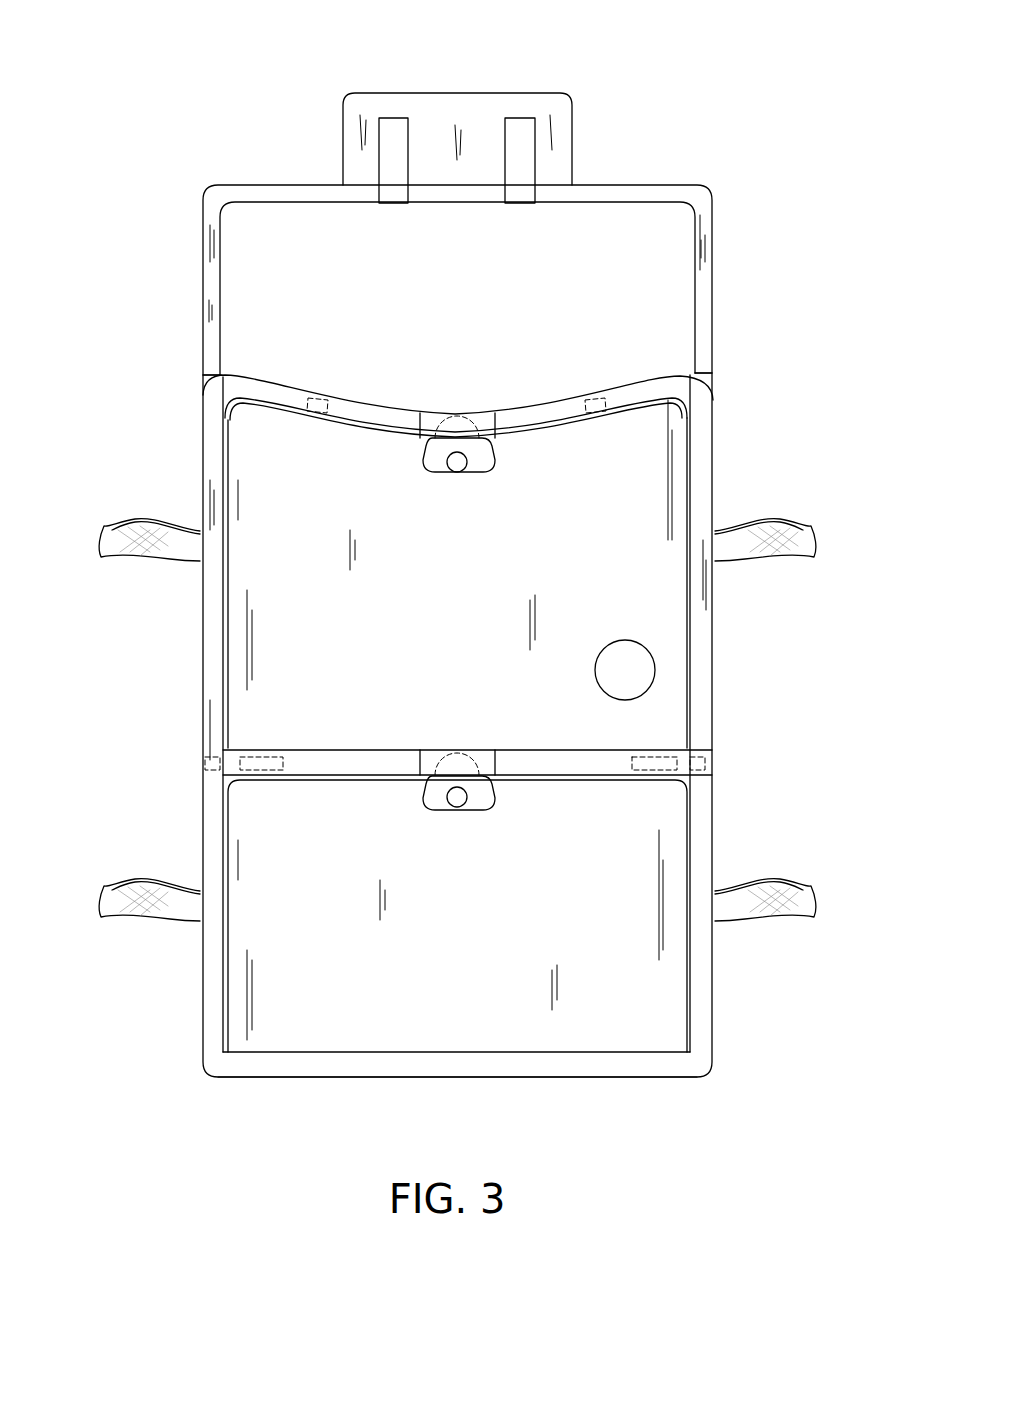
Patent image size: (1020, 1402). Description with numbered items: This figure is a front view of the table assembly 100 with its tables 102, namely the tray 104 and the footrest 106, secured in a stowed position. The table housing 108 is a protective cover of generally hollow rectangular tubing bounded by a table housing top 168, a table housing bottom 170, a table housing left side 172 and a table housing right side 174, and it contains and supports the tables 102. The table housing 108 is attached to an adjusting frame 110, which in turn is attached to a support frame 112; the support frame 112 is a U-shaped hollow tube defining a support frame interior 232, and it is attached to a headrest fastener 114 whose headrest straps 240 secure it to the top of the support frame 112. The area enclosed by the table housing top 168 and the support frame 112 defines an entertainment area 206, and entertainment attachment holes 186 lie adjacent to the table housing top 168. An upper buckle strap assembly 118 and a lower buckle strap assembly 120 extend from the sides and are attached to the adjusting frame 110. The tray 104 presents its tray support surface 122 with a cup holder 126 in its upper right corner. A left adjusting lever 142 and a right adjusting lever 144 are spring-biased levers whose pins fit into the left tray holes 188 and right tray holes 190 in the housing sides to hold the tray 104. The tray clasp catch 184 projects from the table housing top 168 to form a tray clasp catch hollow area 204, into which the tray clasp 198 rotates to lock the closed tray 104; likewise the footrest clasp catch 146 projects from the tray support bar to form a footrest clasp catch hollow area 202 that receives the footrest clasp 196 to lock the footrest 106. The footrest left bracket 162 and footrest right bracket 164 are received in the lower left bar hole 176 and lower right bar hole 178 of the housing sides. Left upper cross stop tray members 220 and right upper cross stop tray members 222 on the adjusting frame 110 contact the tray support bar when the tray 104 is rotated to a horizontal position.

The table assembly 100 is at (235, 186).
The tables 102 is at (560, 1033).
The tray 104 is at (285, 600).
The footrest 106 is at (303, 1027).
The table housing 108 is at (217, 390).
The adjusting frame 110 is at (713, 387).
The support frame 112 is at (705, 200).
The headrest fastener 114 is at (466, 92).
The upper buckle strap assembly 118 is at (110, 527).
The lower buckle strap assembly 120 is at (795, 884).
The tray support surface 122 is at (452, 566).
The cup holder 126 is at (655, 665).
The left adjusting lever 142 is at (262, 762).
The right adjusting lever 144 is at (662, 763).
The footrest clasp catch 146 is at (445, 752).
The footrest left bracket 162 is at (207, 1038).
The footrest right bracket 164 is at (713, 1040).
The table housing top 168 is at (652, 390).
The table housing bottom 170 is at (632, 1065).
The table housing left side 172 is at (210, 848).
The table housing right side 174 is at (712, 835).
The lower left bar hole 176 is at (222, 1045).
The lower right bar hole 178 is at (715, 1048).
The tray clasp catch 184 is at (433, 416).
The entertainment attachment holes 186 is at (318, 398).
The left tray holes 188 is at (200, 768).
The right tray holes 190 is at (706, 763).
The footrest clasp 196 is at (495, 800).
The tray clasp 198 is at (495, 457).
The footrest clasp catch hollow area 202 is at (415, 796).
The tray clasp catch hollow area 204 is at (415, 455).
The entertainment area 206 is at (462, 341).
The left upper cross stop tray members 220 is at (223, 442).
The right upper cross stop tray members 222 is at (690, 449).
The support frame interior 232 is at (462, 266).
The headrest straps 240 is at (520, 180).